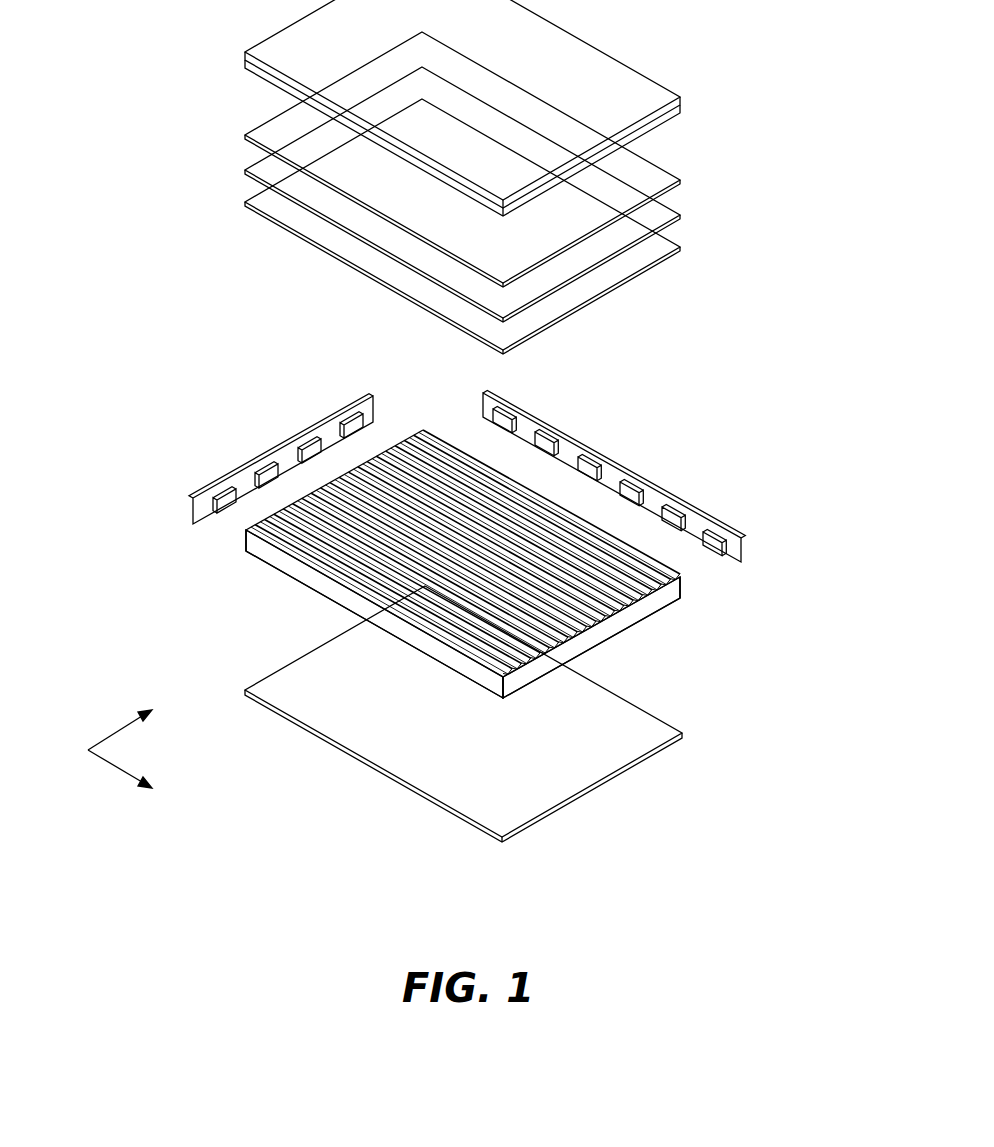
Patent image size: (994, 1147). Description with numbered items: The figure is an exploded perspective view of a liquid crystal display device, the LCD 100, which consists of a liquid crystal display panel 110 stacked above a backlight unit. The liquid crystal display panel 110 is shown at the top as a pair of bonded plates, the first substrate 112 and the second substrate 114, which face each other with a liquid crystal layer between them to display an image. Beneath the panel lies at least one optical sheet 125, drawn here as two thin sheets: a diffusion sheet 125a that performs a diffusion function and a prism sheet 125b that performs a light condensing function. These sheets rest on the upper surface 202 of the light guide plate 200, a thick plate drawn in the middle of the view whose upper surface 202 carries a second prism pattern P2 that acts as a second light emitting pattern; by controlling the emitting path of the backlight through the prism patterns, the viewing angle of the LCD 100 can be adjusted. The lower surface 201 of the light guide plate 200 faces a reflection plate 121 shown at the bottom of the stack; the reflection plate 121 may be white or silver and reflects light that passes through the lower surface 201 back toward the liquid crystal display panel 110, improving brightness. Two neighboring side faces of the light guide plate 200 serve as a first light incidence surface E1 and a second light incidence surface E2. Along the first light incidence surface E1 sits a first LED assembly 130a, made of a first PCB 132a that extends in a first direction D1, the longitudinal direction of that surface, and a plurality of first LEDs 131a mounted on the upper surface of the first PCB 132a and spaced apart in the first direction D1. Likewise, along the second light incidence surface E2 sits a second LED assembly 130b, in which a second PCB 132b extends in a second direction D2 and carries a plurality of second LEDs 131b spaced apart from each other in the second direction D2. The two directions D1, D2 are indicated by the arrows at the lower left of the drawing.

The LCD 100 is at (531, 931).
The liquid crystal display panel 110 is at (541, 108).
The second substrate 114 is at (682, 98).
The first substrate 112 is at (682, 112).
The optical sheet 125 is at (549, 193).
The prism sheet 125b is at (682, 176).
The diffusion sheet 125a is at (677, 240).
The first LED assembly 130a is at (275, 427).
The first LEDs 131a is at (262, 466).
The first PCB 132a is at (236, 483).
The second LED assembly 130b is at (638, 477).
The second LEDs 131b is at (670, 507).
The second PCB 132b is at (700, 527).
The light guide plate 200 is at (472, 535).
The lower surface 201 is at (291, 608).
The upper surface 202 is at (677, 563).
The first light incidence surface E1 is at (226, 545).
The second light incidence surface E2 is at (697, 594).
The second prism pattern P2 is at (447, 448).
The reflection plate 121 is at (670, 724).
The first direction D1 is at (140, 722).
The second direction D2 is at (138, 780).